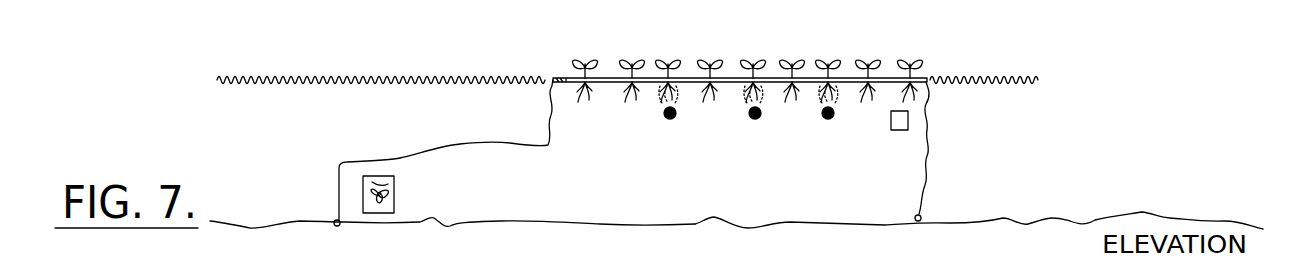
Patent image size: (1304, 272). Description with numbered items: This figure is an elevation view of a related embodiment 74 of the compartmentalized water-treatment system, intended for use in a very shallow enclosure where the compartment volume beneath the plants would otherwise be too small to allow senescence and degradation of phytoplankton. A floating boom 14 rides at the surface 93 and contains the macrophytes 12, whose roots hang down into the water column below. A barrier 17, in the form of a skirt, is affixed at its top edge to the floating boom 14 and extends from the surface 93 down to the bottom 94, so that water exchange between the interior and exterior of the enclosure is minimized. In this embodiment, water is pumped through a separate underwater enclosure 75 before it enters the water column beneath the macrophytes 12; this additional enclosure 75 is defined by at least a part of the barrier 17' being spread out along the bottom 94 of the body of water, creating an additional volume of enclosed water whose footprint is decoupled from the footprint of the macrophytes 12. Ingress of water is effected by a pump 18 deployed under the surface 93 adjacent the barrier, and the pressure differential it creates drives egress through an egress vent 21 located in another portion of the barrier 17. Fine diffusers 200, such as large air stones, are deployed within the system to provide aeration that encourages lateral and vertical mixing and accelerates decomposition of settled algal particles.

The related embodiment 74 is at (482, 34).
The surface 93 is at (996, 73).
The floating boom 14 is at (555, 74).
The macrophytes 12 is at (625, 57).
The fine diffusers 200 is at (676, 120).
The barrier 17 is at (955, 151).
The egress vent 21 is at (908, 128).
The barrier 17' is at (443, 153).
The pump 18 is at (360, 190).
The underwater enclosure 75 is at (463, 212).
The bottom 94 is at (1074, 217).